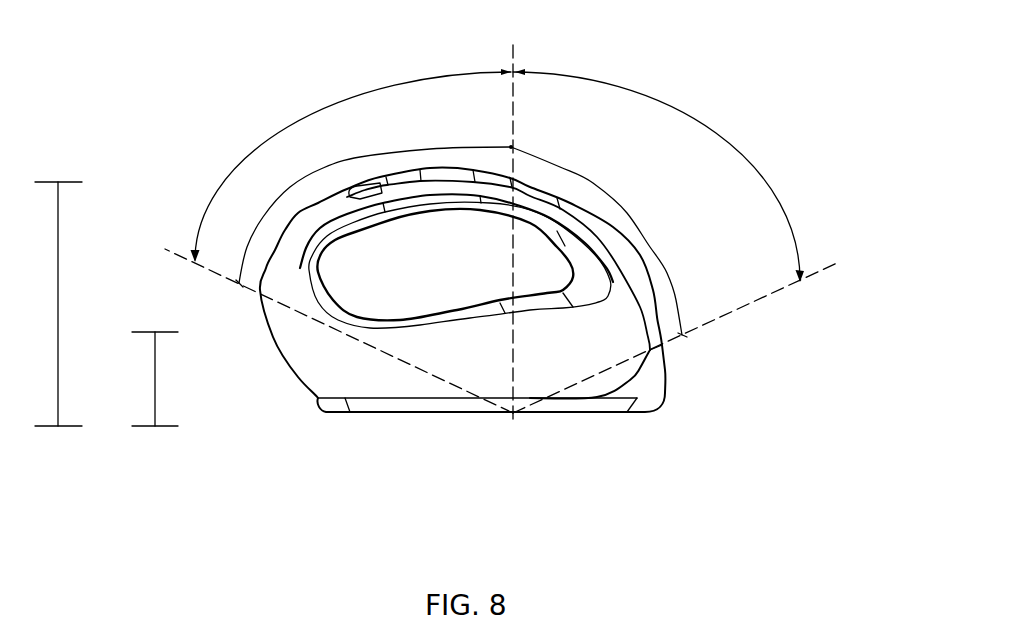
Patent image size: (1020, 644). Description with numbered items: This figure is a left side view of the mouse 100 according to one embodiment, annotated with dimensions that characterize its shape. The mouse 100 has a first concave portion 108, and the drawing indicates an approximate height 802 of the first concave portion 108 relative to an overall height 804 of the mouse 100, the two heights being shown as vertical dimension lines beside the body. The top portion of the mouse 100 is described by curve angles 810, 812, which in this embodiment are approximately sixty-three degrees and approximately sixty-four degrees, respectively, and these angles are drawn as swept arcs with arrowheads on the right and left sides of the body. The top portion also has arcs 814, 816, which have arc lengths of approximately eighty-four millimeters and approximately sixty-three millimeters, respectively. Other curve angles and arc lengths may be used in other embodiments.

The mouse 100 is at (686, 20).
The first concave portion 108 is at (450, 277).
The height 802 is at (155, 378).
The overall height 804 is at (58, 309).
The curve angle 810 is at (720, 138).
The curve angle 812 is at (238, 162).
The arc 814 is at (332, 165).
The arc 816 is at (618, 203).